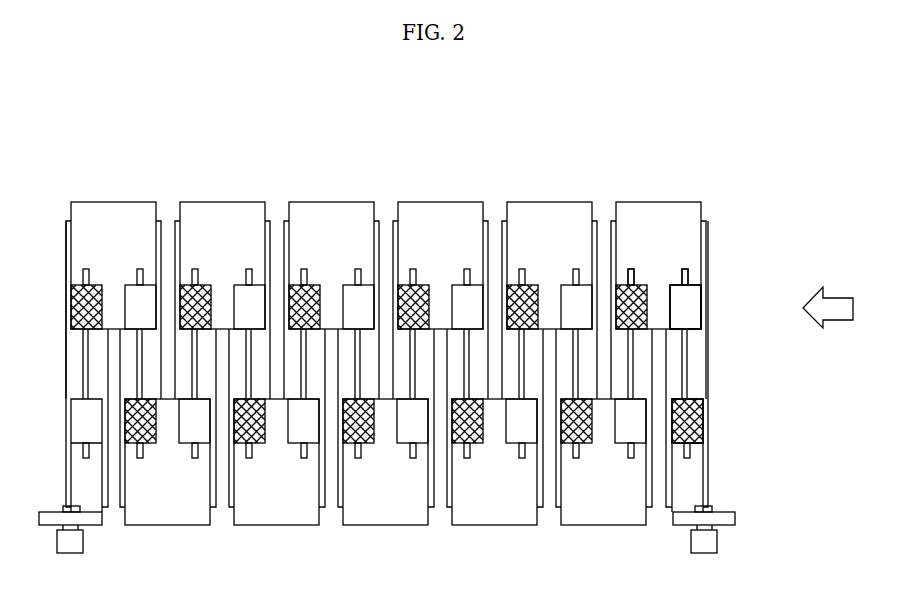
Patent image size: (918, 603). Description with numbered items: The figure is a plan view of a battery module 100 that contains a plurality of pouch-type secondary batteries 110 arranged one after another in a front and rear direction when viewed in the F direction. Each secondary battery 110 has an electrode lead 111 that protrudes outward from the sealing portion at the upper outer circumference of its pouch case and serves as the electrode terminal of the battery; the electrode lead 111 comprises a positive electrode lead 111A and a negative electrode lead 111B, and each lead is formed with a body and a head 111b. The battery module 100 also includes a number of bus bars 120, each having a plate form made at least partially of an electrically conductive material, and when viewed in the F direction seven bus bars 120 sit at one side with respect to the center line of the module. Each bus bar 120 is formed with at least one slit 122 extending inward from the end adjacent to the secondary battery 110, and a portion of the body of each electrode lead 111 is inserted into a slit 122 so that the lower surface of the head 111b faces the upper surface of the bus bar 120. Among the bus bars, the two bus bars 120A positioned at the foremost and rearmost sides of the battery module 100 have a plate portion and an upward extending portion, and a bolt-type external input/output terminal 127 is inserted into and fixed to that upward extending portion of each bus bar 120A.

The battery module 100 is at (162, 103).
The secondary battery 110 is at (128, 353).
The electrode lead 111 is at (776, 306).
The positive electrode lead 111A is at (704, 317).
The negative electrode lead 111B is at (703, 410).
The head 111b is at (695, 296).
The bus bar 120 is at (494, 526).
The bus bar 120A is at (100, 543).
The slit 122 is at (687, 268).
The external input/output terminal 127 is at (67, 553).